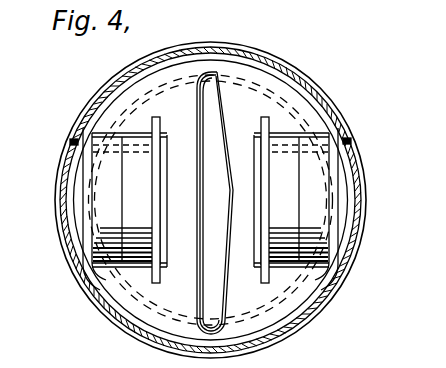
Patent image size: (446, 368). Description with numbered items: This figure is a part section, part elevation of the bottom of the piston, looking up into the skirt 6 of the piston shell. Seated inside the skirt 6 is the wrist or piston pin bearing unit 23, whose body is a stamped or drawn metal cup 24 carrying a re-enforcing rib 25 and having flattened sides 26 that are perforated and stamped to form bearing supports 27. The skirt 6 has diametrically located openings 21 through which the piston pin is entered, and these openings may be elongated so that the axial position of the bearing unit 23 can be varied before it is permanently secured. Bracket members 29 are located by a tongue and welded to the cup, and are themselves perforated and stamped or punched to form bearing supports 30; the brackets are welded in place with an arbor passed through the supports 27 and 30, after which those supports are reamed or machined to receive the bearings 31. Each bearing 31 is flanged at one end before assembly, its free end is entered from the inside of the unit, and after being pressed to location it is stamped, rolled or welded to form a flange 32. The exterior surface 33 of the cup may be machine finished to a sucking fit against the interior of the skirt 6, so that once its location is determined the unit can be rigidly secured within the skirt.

The skirt 6 is at (75, 279).
The openings 21 is at (72, 142).
The piston pin bearing unit 23 is at (143, 294).
The cup 24 is at (125, 317).
The re-enforcing rib 25 is at (225, 277).
The flattened sides 26 is at (90, 170).
The bearing supports 27 is at (110, 190).
The bracket members 29 is at (157, 284).
The bearing supports 30 is at (138, 212).
The bearings 31 is at (150, 226).
The flange 32 is at (82, 237).
The exterior surface 33 is at (117, 100).